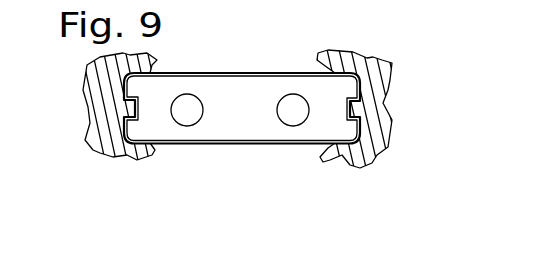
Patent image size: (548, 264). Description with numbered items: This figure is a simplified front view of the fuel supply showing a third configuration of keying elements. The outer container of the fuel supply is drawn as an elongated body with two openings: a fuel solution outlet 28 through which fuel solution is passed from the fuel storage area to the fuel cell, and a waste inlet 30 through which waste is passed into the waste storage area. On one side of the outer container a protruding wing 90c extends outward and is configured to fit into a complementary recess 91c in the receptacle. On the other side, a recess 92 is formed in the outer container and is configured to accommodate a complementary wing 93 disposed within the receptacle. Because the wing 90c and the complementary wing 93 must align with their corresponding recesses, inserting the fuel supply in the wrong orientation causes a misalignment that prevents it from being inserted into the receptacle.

The fuel solution outlet 28 is at (277, 112).
The waste inlet 30 is at (203, 112).
The protruding wing 90c is at (365, 110).
The complementary recess 91c is at (388, 150).
The recess 92 is at (128, 109).
The complementary wing 93 is at (137, 107).